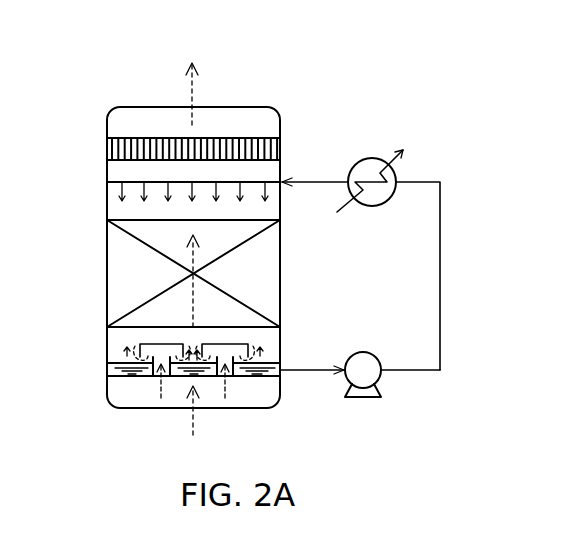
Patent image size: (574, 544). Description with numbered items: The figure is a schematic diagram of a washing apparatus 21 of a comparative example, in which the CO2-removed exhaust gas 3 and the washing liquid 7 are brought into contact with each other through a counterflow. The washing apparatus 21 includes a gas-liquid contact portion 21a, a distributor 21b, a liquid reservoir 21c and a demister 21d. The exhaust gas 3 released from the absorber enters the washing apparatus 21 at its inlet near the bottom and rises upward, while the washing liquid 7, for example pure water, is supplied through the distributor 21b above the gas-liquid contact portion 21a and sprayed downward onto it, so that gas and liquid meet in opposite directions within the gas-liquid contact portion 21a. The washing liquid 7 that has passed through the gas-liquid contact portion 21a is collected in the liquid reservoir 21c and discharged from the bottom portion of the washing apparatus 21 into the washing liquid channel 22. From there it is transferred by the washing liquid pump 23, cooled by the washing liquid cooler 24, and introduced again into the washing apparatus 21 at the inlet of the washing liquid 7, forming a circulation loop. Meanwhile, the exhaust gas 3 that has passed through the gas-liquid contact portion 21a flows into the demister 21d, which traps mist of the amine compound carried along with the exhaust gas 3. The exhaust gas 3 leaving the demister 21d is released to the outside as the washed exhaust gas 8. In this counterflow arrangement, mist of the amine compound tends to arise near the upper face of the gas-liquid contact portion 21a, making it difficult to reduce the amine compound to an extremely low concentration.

The washing apparatus 21 is at (108, 108).
The gas-liquid contact portion 21a is at (108, 287).
The distributor 21b is at (114, 184).
The liquid reservoir 21c is at (122, 372).
The demister 21d is at (107, 150).
The washed exhaust gas 8 is at (196, 91).
The CO2-removed exhaust gas 3 is at (197, 426).
The washing liquid 7 is at (440, 230).
The washing liquid channel 22 is at (440, 283).
The washing liquid pump 23 is at (365, 352).
The washing liquid cooler 24 is at (372, 158).